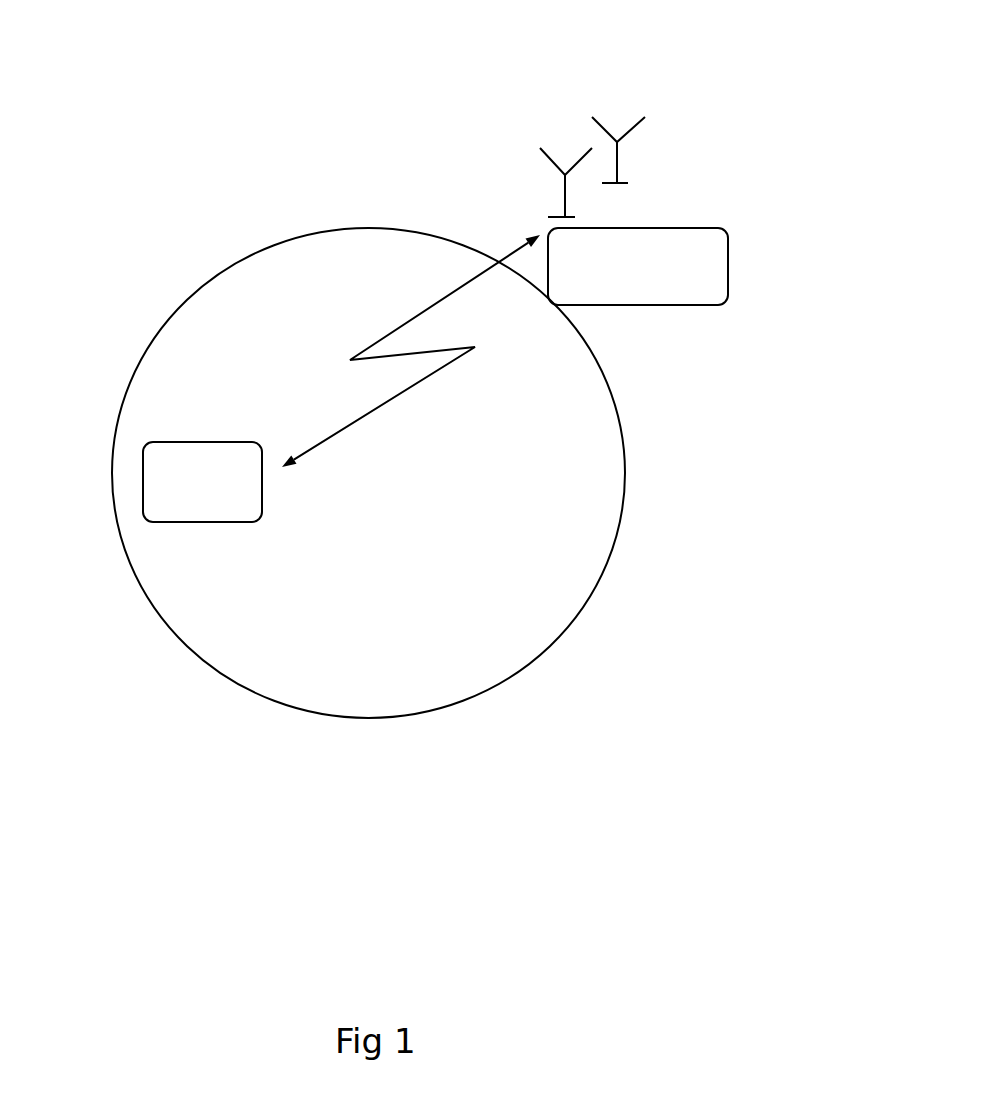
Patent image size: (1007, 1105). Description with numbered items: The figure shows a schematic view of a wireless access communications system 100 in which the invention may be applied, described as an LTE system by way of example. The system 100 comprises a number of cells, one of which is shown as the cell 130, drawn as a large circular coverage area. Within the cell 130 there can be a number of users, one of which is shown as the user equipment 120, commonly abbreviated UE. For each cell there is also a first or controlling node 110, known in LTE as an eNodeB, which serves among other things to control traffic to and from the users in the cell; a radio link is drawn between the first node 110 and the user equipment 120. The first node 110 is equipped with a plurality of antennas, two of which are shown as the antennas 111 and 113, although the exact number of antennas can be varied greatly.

The wireless access communications system 100 is at (162, 108).
The first or controlling node 110 is at (696, 188).
The antenna 111 is at (532, 114).
The antenna 113 is at (600, 86).
The user equipment 120 is at (162, 427).
The cell 130 is at (606, 617).